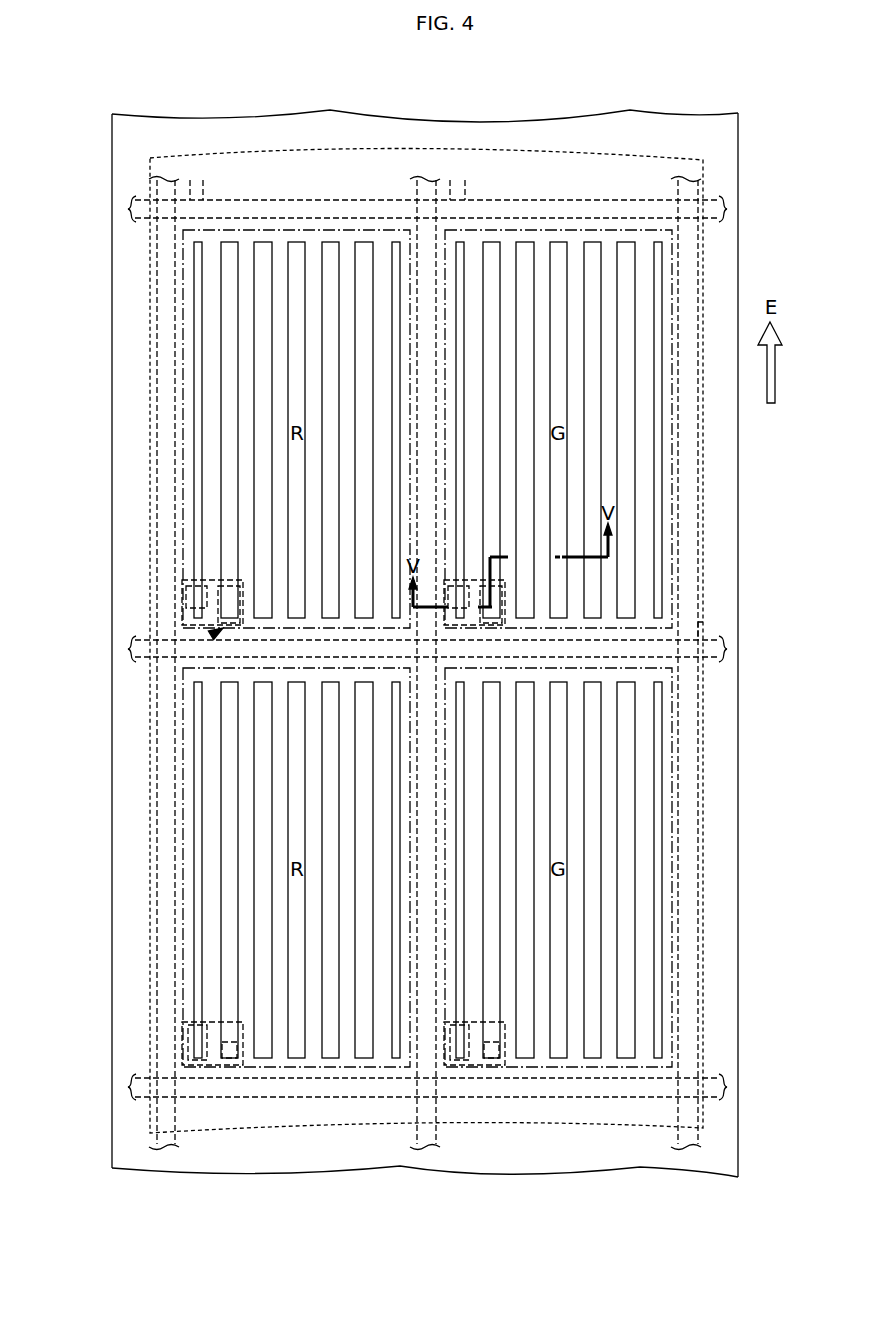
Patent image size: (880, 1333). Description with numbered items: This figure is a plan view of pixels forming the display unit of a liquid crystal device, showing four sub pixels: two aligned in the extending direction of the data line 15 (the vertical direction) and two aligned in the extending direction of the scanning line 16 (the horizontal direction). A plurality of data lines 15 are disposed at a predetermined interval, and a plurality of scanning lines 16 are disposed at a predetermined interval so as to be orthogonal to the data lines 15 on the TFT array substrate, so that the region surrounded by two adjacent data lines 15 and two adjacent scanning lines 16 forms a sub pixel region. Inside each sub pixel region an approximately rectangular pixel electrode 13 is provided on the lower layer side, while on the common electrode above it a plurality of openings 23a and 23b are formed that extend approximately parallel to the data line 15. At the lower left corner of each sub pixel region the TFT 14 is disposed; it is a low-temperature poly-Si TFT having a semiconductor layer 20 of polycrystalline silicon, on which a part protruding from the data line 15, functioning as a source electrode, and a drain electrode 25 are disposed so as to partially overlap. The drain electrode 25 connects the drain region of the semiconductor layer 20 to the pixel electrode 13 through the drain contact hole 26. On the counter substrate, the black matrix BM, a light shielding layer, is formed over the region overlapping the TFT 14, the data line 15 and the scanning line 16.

The pixel electrode 13 is at (350, 232).
The TFT 14 is at (210, 636).
The data line 15 is at (166, 178).
The scanning line 16 is at (718, 634).
The semiconductor layer 20 is at (183, 602).
The opening 23a is at (455, 273).
The opening 23b is at (547, 270).
The drain electrode 25 is at (237, 590).
The drain contact hole 26 is at (200, 584).
The black matrix BM is at (538, 1128).